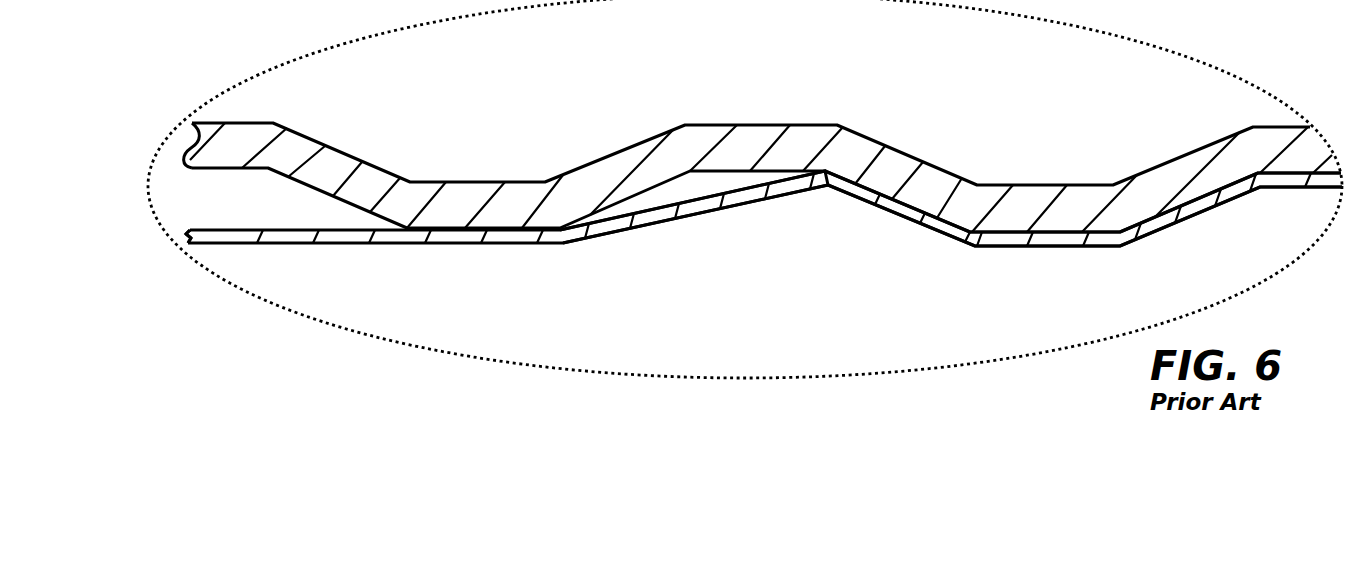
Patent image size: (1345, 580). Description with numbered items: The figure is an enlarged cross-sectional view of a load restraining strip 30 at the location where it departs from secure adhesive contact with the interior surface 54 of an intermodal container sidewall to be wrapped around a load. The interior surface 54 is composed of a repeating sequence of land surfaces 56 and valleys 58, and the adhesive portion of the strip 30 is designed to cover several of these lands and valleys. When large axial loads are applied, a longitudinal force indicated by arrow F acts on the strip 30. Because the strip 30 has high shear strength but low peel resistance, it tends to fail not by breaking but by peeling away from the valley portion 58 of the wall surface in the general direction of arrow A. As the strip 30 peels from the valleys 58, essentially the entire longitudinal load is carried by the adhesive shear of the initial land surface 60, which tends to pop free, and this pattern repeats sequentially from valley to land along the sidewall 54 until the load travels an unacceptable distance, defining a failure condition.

The load restraining strip 30 is at (735, 259).
The interior surface 54 is at (350, 150).
The land surfaces 56 is at (1106, 254).
The valleys 58 is at (676, 192).
The initial land surface 60 is at (442, 256).
The arrow A is at (703, 215).
The arrow F is at (182, 234).